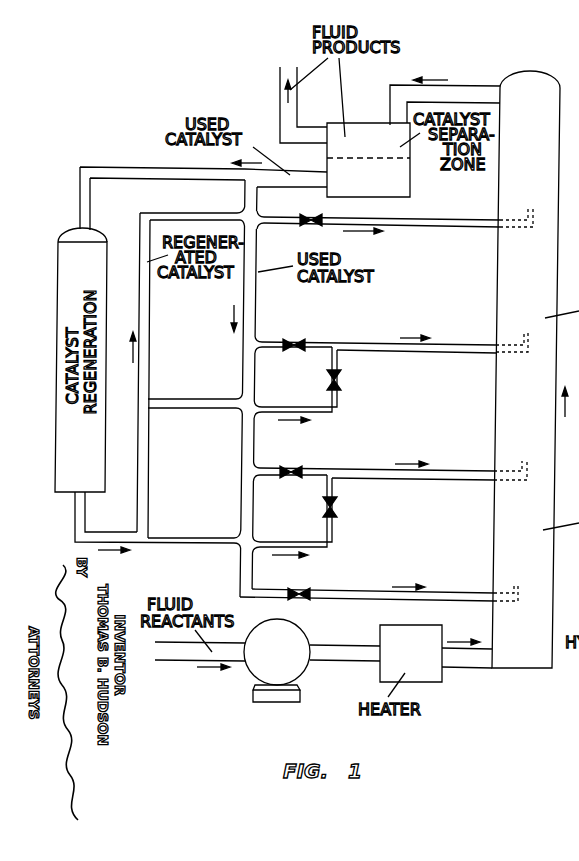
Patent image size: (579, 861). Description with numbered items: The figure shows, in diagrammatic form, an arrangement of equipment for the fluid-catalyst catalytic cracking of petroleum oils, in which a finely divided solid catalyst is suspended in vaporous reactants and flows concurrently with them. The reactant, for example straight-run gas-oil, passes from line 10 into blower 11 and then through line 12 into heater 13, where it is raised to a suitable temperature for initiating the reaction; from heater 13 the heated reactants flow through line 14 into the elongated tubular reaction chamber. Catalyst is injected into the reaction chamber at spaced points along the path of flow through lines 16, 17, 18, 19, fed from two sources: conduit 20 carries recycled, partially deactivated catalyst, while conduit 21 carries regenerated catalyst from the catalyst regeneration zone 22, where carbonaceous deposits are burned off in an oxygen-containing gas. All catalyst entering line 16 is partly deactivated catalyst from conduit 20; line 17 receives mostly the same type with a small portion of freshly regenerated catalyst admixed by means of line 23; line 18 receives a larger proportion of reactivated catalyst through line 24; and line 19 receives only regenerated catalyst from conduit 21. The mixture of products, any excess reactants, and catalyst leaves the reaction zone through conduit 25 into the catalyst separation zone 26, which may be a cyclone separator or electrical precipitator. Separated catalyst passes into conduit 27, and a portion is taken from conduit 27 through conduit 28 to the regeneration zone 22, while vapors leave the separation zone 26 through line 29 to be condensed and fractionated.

The line 10 is at (192, 652).
The blower 11 is at (265, 672).
The line 12 is at (343, 657).
The heater 13 is at (425, 678).
The line 14 is at (477, 658).
The line 16 is at (470, 590).
The line 17 is at (472, 470).
The line 18 is at (482, 343).
The line 19 is at (480, 222).
The conduit 20 is at (253, 327).
The conduit 21 is at (147, 397).
The catalyst regeneration zone 22 is at (60, 495).
The line 23 is at (318, 547).
The line 24 is at (322, 412).
The conduit 25 is at (460, 92).
The catalyst separation zone 26 is at (405, 188).
The conduit 27 is at (272, 180).
The conduit 28 is at (115, 168).
The line 29 is at (283, 70).